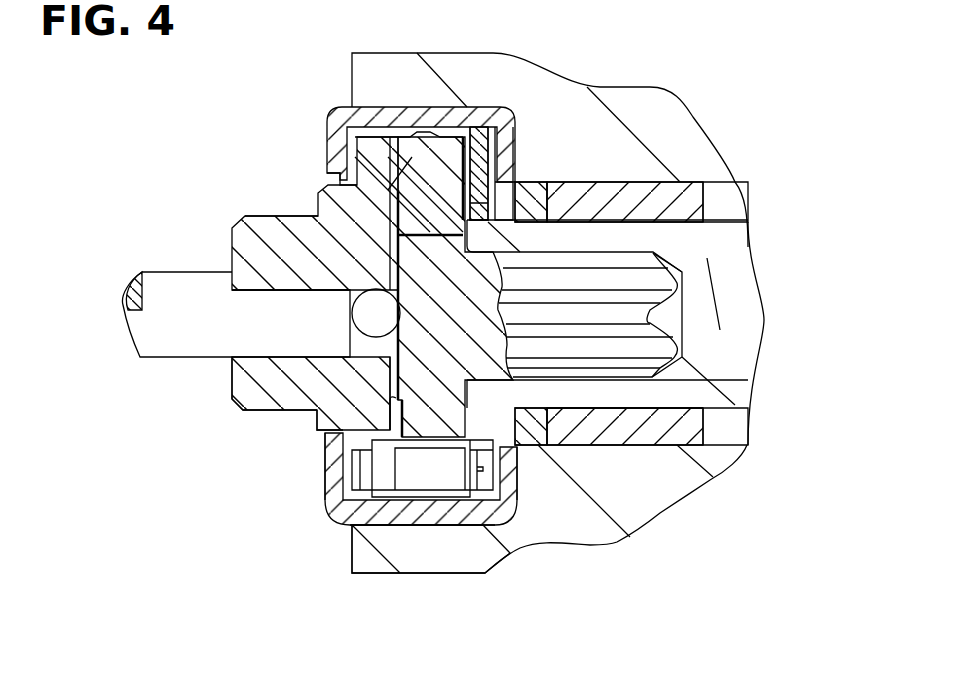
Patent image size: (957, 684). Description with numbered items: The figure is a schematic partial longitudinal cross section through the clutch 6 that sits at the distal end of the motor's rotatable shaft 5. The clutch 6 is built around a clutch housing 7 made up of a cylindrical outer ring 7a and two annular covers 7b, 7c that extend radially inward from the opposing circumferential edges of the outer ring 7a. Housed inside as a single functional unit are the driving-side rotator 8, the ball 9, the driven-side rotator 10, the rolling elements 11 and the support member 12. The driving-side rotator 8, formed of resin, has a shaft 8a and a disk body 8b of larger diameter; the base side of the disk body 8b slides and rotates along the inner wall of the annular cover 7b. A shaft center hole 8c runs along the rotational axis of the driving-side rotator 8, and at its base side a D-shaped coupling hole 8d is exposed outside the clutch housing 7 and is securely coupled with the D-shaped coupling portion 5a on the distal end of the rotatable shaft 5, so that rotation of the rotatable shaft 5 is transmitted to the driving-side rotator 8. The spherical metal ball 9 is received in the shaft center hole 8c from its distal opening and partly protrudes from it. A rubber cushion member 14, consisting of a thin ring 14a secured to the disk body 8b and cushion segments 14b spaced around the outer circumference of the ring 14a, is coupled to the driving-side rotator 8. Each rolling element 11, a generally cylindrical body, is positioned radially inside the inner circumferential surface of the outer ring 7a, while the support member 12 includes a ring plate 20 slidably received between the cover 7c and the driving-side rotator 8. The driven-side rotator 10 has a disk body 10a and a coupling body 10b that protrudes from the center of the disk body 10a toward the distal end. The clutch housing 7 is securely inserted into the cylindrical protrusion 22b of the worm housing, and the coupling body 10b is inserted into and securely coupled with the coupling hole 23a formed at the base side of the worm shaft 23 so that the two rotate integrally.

The rotatable shaft 5 is at (152, 270).
The coupling portion 5a is at (283, 300).
The clutch 6 is at (331, 88).
The clutch housing 7 is at (330, 515).
The outer ring 7a is at (465, 517).
The annular cover 7b is at (330, 485).
The annular cover 7c is at (507, 467).
The driving-side rotator 8 is at (263, 413).
The shaft 8a is at (300, 400).
The disk body 8b is at (383, 150).
The shaft center hole 8c is at (277, 347).
The coupling hole 8d is at (243, 300).
The ball 9 is at (358, 315).
The driven-side rotator 10 is at (684, 337).
The disk body 10a is at (505, 327).
The coupling body 10b is at (617, 347).
The rolling element 11 is at (433, 477).
The support member 12 is at (508, 136).
The cushion member 14 is at (447, 157).
The ring 14a is at (403, 388).
The cushion segment 14b is at (432, 207).
The ring plate 20 is at (490, 118).
The cylindrical protrusion 22b is at (367, 562).
The worm shaft 23 is at (768, 330).
The coupling hole 23a is at (625, 253).